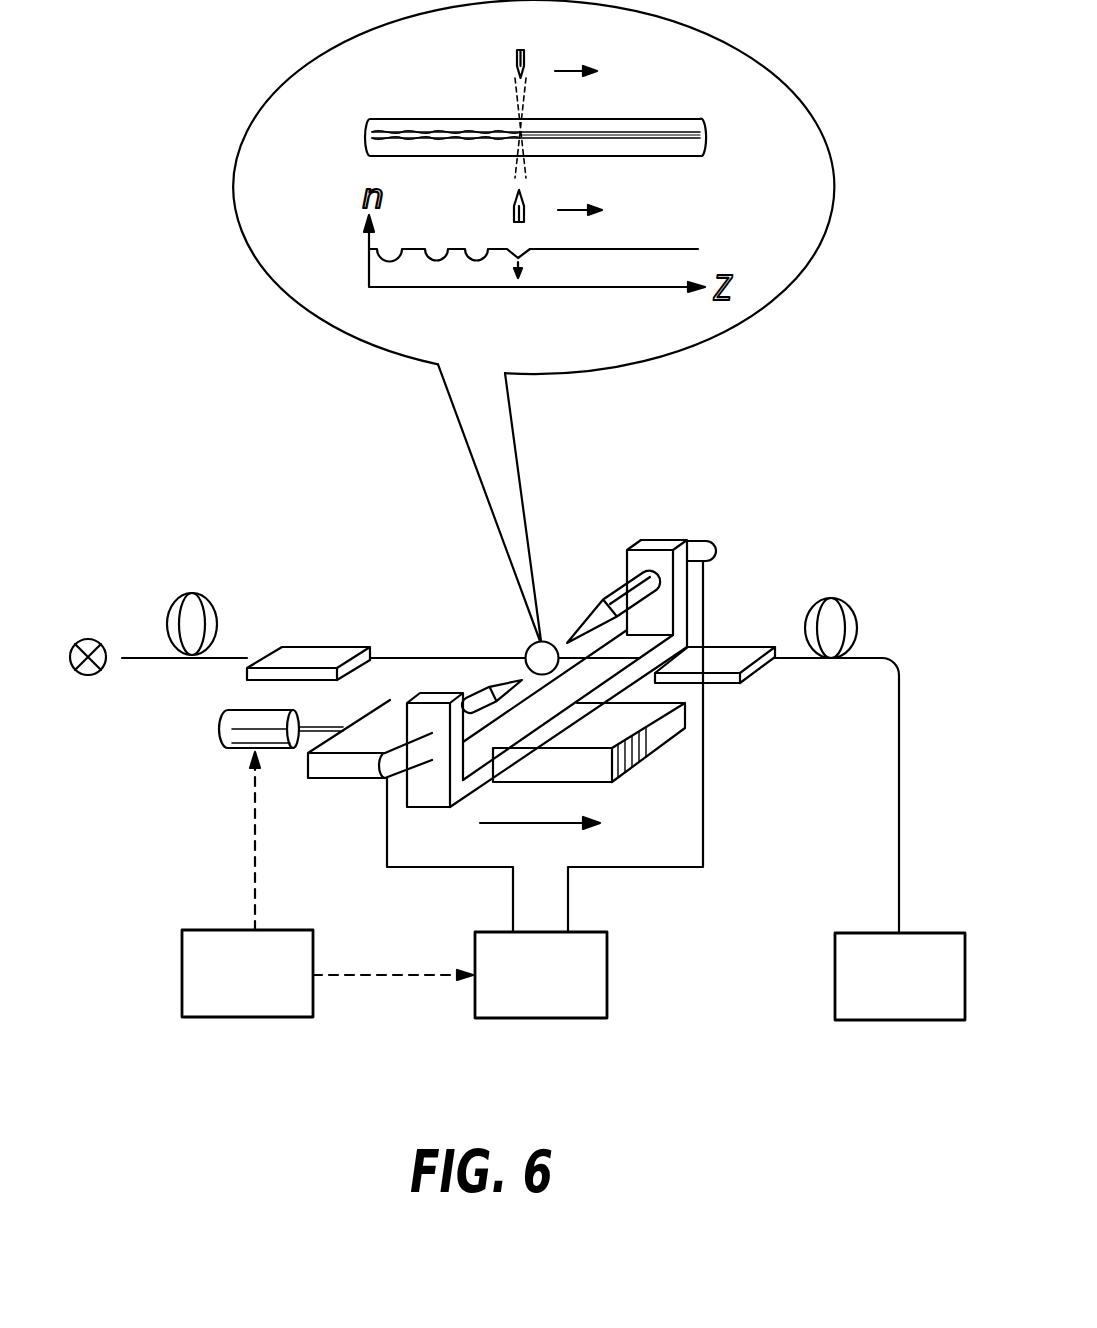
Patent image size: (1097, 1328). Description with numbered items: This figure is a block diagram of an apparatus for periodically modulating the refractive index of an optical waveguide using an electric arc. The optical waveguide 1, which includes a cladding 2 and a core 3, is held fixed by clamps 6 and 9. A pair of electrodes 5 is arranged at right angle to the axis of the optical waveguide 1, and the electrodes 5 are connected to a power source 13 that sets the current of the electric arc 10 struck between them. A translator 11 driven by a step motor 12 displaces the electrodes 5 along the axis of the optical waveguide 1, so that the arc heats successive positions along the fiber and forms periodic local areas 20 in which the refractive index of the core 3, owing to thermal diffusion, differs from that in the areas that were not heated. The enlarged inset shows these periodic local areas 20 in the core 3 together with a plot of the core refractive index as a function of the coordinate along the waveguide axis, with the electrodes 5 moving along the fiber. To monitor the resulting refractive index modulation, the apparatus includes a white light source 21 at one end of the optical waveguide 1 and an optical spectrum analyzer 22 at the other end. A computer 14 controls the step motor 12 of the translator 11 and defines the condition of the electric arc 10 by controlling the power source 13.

The optical waveguide 1 is at (703, 125).
The cladding 2 is at (645, 128).
The core 3 is at (598, 130).
The electrodes 5 is at (525, 56).
The clamp 6 is at (310, 650).
The clamp 9 is at (745, 647).
The electric arc 10 is at (510, 128).
The translator 11 is at (355, 770).
The step motor 12 is at (232, 722).
The power source 13 is at (547, 779).
The computer 14 is at (327, 884).
The periodic local areas 20 is at (433, 133).
The white light source 21 is at (90, 637).
The optical spectrum analyzer 22 is at (900, 976).